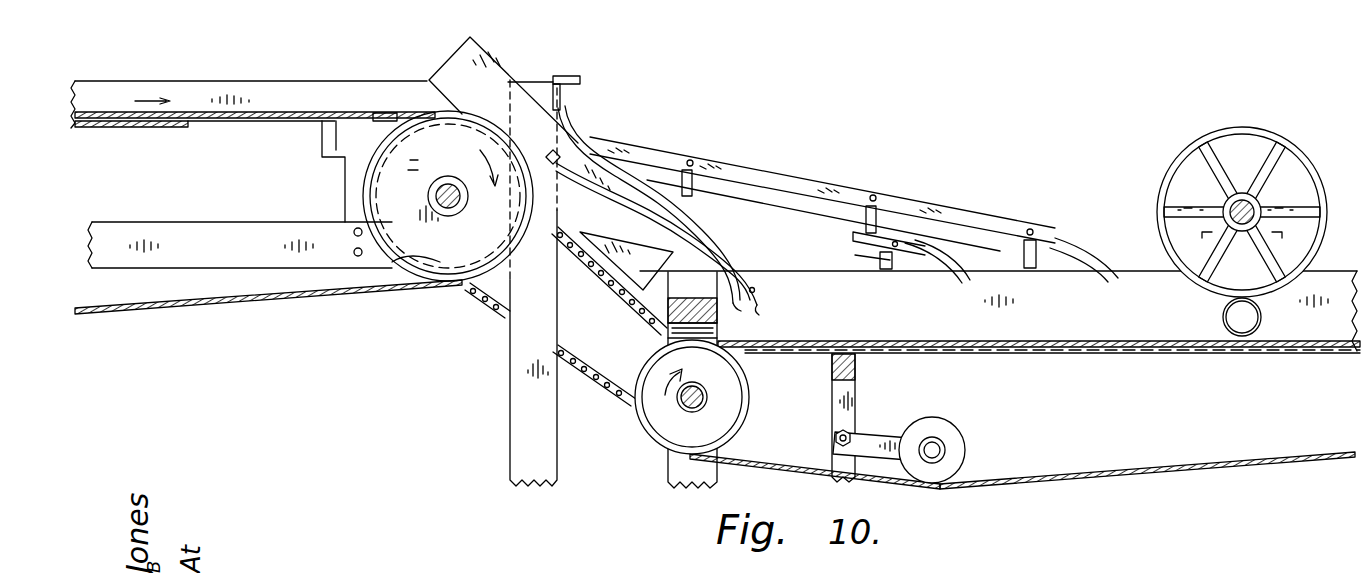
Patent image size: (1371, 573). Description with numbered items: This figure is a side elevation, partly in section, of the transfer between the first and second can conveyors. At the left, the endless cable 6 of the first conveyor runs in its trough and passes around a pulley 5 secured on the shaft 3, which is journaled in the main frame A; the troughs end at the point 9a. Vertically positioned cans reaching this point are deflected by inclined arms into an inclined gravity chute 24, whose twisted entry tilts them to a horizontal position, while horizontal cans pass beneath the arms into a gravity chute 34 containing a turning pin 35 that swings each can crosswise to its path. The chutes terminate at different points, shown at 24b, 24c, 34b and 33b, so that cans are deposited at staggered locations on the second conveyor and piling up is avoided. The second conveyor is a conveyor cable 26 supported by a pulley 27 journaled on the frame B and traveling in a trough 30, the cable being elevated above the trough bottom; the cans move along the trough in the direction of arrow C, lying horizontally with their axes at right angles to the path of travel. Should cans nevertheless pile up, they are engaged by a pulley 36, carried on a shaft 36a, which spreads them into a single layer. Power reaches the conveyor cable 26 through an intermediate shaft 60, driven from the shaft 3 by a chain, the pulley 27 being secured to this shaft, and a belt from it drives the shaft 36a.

The end point of troughs 9a is at (275, 84).
The gravity chute 34 is at (490, 57).
The turning pin 35 is at (557, 157).
The inclined gravity chute 24 is at (672, 163).
The termination point of chute 24c is at (905, 255).
The termination point of chute 24b is at (1065, 262).
The pulley 36 is at (1270, 145).
The shaft 36a is at (1255, 207).
The trough or chute 30 is at (1133, 288).
The shaft 3 is at (455, 200).
The pulley 5 is at (438, 260).
The endless cable 6 is at (195, 298).
The termination point of chute 34b is at (753, 305).
The termination point of chute 33b is at (900, 316).
The conveyor cable 26 is at (1023, 340).
The intermediate shaft 60 is at (700, 405).
The pulley 27 is at (650, 415).
The main frame A is at (522, 440).
The frame B is at (672, 467).
The arrow indicating direction of travel C is at (1185, 370).